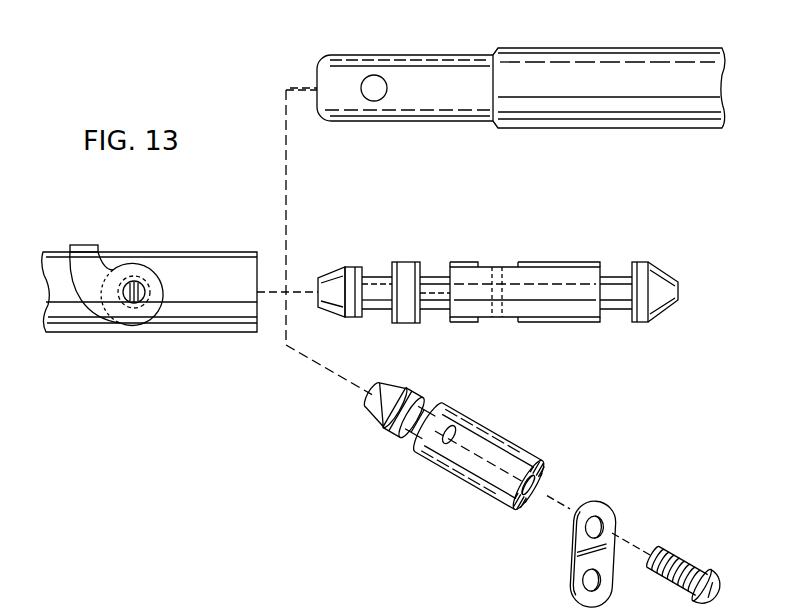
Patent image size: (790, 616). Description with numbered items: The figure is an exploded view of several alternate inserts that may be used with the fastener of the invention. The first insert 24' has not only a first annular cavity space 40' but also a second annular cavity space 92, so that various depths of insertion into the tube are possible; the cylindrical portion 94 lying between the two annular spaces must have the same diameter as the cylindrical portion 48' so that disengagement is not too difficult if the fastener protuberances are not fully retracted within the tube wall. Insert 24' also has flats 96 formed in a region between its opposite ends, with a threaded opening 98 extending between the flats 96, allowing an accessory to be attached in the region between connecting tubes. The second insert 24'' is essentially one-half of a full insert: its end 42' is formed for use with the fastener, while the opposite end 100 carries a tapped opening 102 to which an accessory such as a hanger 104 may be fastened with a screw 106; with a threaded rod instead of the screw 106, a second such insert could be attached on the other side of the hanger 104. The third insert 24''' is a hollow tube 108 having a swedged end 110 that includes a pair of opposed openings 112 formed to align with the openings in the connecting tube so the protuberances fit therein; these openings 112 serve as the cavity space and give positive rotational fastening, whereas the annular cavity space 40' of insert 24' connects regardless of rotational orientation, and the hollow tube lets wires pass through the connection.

The insert 24' is at (614, 221).
The insert 24'' is at (423, 526).
The insert 24''' is at (549, 13).
The first annular cavity space 40' is at (498, 278).
The end 42' is at (394, 423).
The cylindrical portion 48' is at (488, 276).
The second annular cavity space 92 is at (437, 312).
The cylindrical portion 94 is at (404, 262).
The flats 96 is at (483, 262).
The threaded opening 98 is at (500, 288).
The end 100 is at (543, 470).
The tapped opening 102 is at (533, 489).
The hanger 104 is at (572, 570).
The screw 106 is at (692, 577).
The tube 108 is at (603, 50).
The swedged end 110 is at (424, 56).
The openings 112 is at (374, 76).